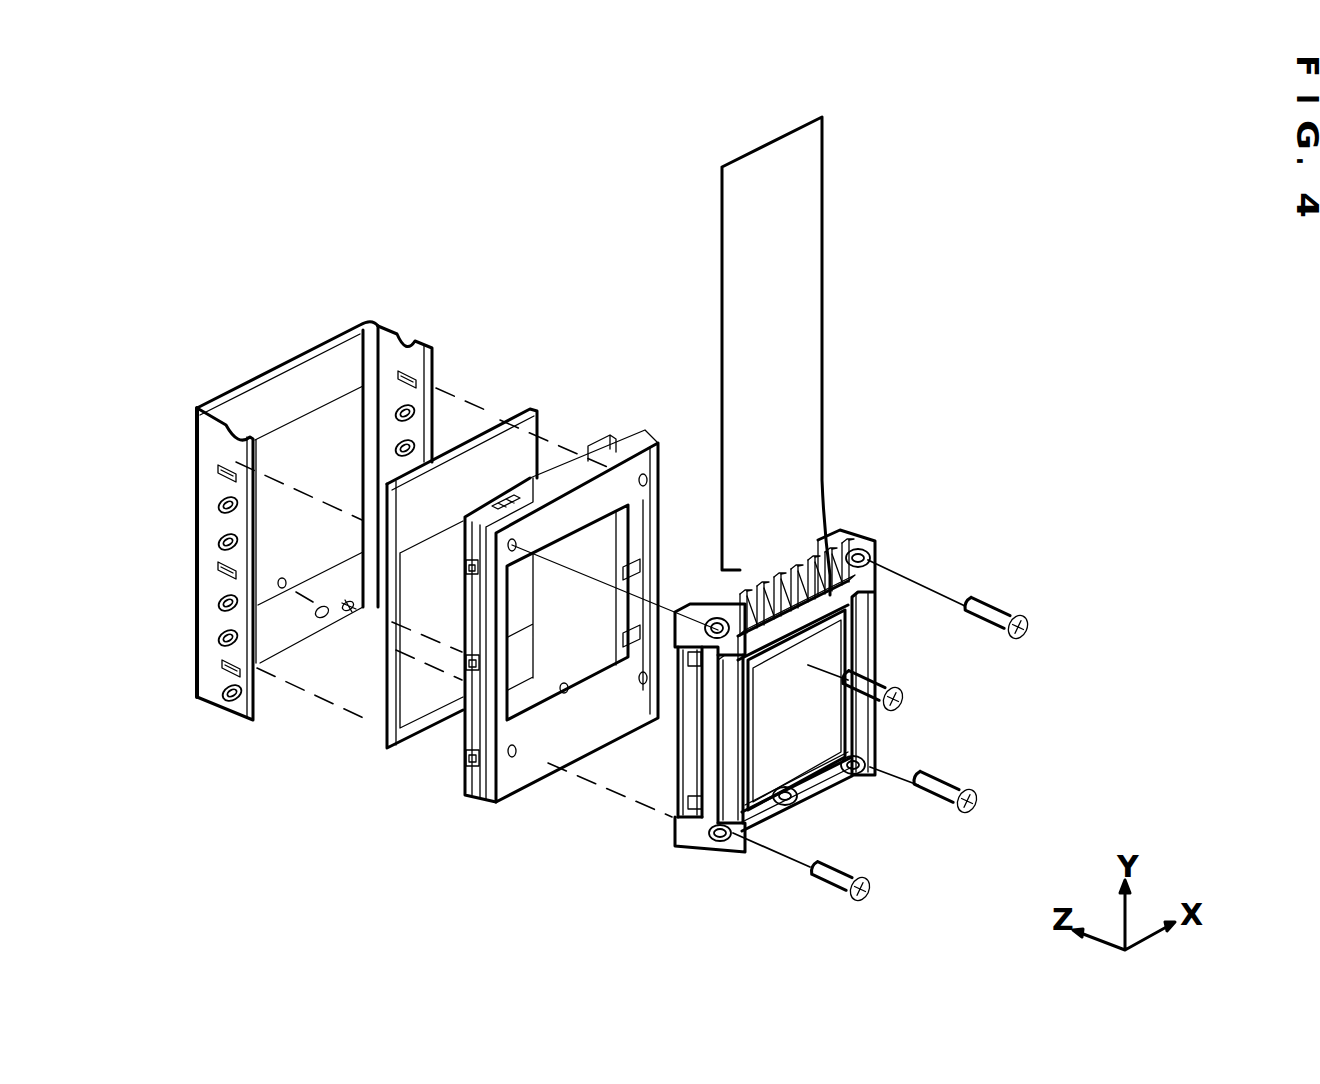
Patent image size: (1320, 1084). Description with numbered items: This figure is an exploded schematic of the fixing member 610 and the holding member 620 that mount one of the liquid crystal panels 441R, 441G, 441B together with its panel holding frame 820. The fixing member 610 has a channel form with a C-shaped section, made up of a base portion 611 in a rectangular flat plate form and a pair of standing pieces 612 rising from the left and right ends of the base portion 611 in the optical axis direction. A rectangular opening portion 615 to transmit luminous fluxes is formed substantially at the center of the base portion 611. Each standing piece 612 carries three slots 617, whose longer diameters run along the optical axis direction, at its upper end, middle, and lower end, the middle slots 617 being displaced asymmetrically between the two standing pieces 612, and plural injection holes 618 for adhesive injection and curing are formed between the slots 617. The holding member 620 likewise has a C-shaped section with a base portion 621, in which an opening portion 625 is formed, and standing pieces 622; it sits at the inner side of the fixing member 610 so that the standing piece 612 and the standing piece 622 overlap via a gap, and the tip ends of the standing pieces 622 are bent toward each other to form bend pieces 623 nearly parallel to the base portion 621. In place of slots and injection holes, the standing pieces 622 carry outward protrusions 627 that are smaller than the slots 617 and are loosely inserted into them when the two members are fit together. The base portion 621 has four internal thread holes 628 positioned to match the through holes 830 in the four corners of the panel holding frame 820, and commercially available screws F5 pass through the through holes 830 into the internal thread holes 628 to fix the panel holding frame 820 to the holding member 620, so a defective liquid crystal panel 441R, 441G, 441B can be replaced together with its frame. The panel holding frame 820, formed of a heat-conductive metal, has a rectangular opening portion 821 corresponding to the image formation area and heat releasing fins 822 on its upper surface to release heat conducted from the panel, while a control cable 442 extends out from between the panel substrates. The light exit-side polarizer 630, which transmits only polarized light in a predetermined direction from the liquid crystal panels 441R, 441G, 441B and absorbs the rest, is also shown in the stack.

The fixing member 610 is at (215, 700).
The base portion 611 is at (313, 398).
The standing piece 612 is at (388, 342).
The opening portion 615 is at (283, 588).
The slot 617 is at (216, 466).
The injection hole 618 is at (220, 542).
The holding member 620 is at (513, 780).
The base portion 621 is at (575, 533).
The standing piece 622 is at (643, 434).
The bend piece 623 is at (603, 445).
The opening portion 625 is at (565, 693).
The protrusion 627 is at (476, 568).
The internal thread hole 628 is at (516, 545).
The light exit-side polarizer 630 is at (531, 406).
The panel holding frame 820 is at (683, 766).
The opening portion 821 is at (855, 722).
The heat releasing fin 822 is at (786, 597).
The through hole 830 is at (870, 553).
The liquid crystal panel 441R is at (906, 744).
The liquid crystal panel 441G is at (906, 744).
The liquid crystal panel 441B is at (815, 735).
The control cable 442 is at (808, 190).
The screw F5 is at (903, 698).